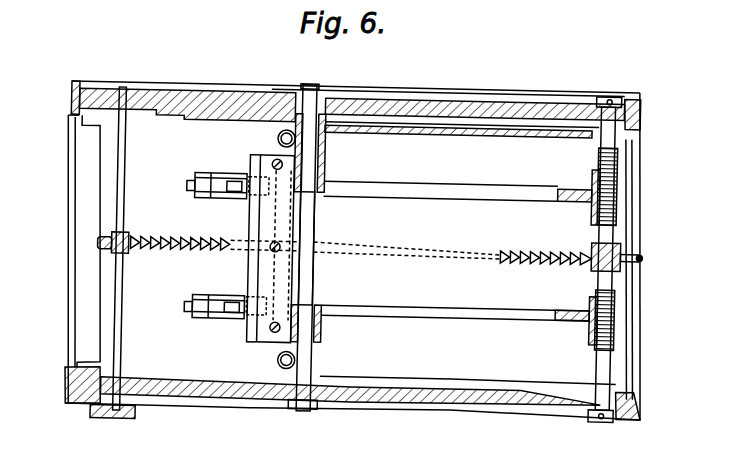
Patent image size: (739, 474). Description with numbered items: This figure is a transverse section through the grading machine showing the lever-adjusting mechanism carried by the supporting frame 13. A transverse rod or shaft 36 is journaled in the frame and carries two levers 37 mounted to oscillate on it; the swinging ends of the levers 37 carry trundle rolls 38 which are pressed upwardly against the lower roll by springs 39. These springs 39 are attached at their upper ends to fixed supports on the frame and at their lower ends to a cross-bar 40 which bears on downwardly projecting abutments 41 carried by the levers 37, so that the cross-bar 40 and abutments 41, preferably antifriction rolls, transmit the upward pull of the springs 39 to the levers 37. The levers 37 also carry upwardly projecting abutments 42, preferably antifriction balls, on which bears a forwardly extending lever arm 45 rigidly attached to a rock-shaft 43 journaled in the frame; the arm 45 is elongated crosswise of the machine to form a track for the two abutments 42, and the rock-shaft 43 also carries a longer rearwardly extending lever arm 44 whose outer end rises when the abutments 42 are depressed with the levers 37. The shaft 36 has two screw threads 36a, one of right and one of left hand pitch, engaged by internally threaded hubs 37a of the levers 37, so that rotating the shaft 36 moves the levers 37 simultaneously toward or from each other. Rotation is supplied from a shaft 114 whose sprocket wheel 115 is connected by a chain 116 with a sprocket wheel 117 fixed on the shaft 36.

The supporting frame 13 is at (346, 271).
The transverse rod or shaft 36 is at (521, 178).
The screw threads 36a is at (569, 262).
The levers 37 is at (470, 282).
The hubs 37a is at (552, 262).
The trundle rolls 38 is at (198, 247).
The springs 39 is at (259, 250).
The cross-bar 40 is at (325, 248).
The downwardly projecting abutments 41 is at (235, 207).
The upwardly projecting abutments 42 is at (236, 255).
The rock-shaft 43 is at (324, 249).
The longer rearwardly extending lever arm 44 is at (461, 146).
The forwardly extending lever arm 45 is at (259, 231).
The shaft 114 is at (132, 253).
The sprocket wheel 115 is at (107, 263).
The chain 116 is at (190, 259).
The sprocket wheel 117 is at (452, 244).